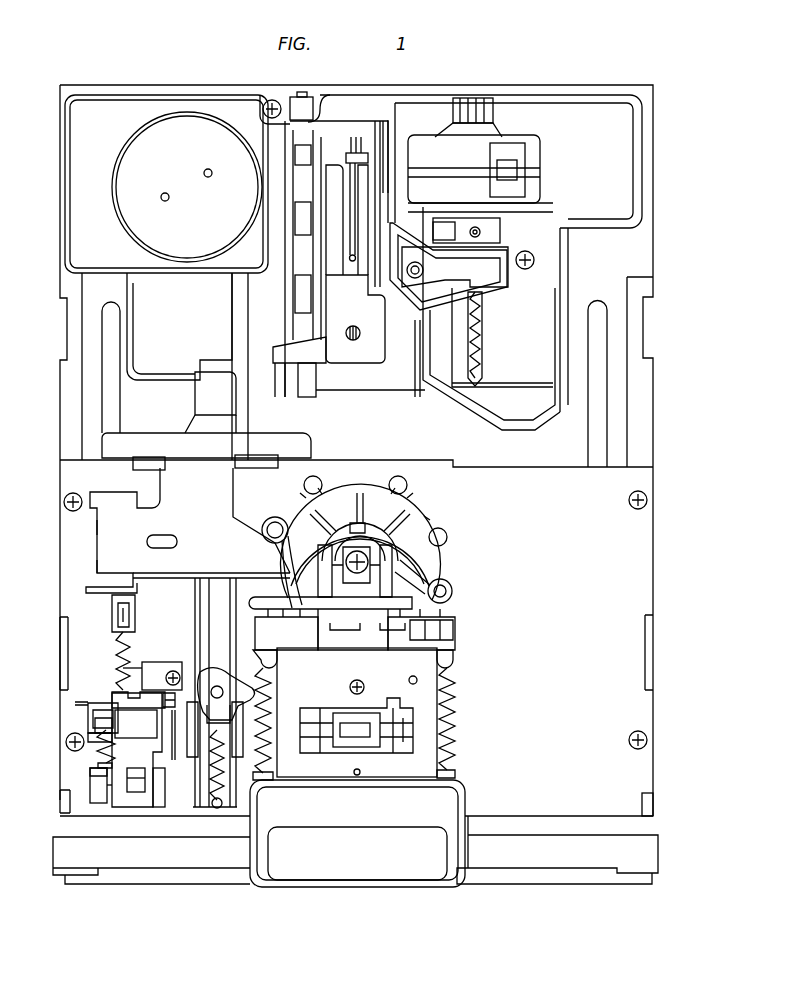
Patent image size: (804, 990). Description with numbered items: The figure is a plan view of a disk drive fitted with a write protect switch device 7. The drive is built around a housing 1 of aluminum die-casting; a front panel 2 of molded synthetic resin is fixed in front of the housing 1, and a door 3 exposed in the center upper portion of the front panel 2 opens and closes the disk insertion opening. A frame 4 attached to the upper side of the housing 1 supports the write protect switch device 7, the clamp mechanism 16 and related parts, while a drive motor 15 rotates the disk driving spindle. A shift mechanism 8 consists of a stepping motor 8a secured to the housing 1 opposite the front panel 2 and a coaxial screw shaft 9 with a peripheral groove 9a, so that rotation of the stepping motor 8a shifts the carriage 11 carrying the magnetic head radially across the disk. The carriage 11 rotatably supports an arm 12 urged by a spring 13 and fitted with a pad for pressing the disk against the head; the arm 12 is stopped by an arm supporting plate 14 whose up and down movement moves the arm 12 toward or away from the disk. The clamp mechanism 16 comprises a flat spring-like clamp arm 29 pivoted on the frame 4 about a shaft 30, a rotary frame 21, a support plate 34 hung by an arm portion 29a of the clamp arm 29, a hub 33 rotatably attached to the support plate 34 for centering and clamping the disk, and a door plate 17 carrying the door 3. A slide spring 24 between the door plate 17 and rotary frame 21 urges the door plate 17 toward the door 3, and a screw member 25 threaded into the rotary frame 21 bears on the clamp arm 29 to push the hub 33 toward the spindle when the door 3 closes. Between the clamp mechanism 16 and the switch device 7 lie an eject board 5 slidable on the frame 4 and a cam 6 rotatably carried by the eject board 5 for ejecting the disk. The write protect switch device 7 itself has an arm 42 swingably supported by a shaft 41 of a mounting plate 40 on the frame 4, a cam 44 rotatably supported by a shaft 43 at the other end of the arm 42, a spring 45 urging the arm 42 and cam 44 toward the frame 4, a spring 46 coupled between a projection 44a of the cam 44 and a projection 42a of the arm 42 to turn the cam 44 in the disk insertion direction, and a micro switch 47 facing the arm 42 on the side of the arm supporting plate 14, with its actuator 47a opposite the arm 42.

The housing 1 is at (648, 253).
The front panel 2 is at (572, 865).
The door 3 is at (363, 885).
The frame 4 is at (648, 563).
The eject board 5 is at (197, 592).
The cam 6 is at (206, 680).
The write protect switch device 7 is at (98, 735).
The shift mechanism 8 is at (554, 148).
The stepping motor 8a is at (500, 120).
The screw shaft 9 is at (482, 315).
The groove 9a is at (482, 345).
The carriage 11 is at (394, 388).
The arm 12 is at (353, 360).
The spring 13 is at (350, 257).
The arm supporting plate 14 is at (97, 536).
The drive motor 15 is at (142, 140).
The clamp mechanism 16 is at (459, 610).
The door plate 17 is at (453, 650).
The rotary frame 21 is at (440, 765).
The slide spring 24 is at (455, 745).
The screw member 25 is at (360, 686).
The clamp arm 29 is at (345, 640).
The arm portion 29a is at (415, 573).
The shaft 30 is at (413, 725).
The hub 33 is at (405, 528).
The support plate 34 is at (417, 558).
The mounting plate 40 is at (160, 800).
The shaft 41 is at (140, 793).
The arm 42 is at (120, 805).
The projection 42a is at (100, 790).
The shaft 43 is at (172, 717).
The cam 44 is at (83, 709).
The projection 44a is at (64, 724).
The spring 45 is at (120, 642).
The spring 46 is at (110, 776).
The micro switch 47 is at (155, 668).
The switch actuator 47a is at (124, 685).